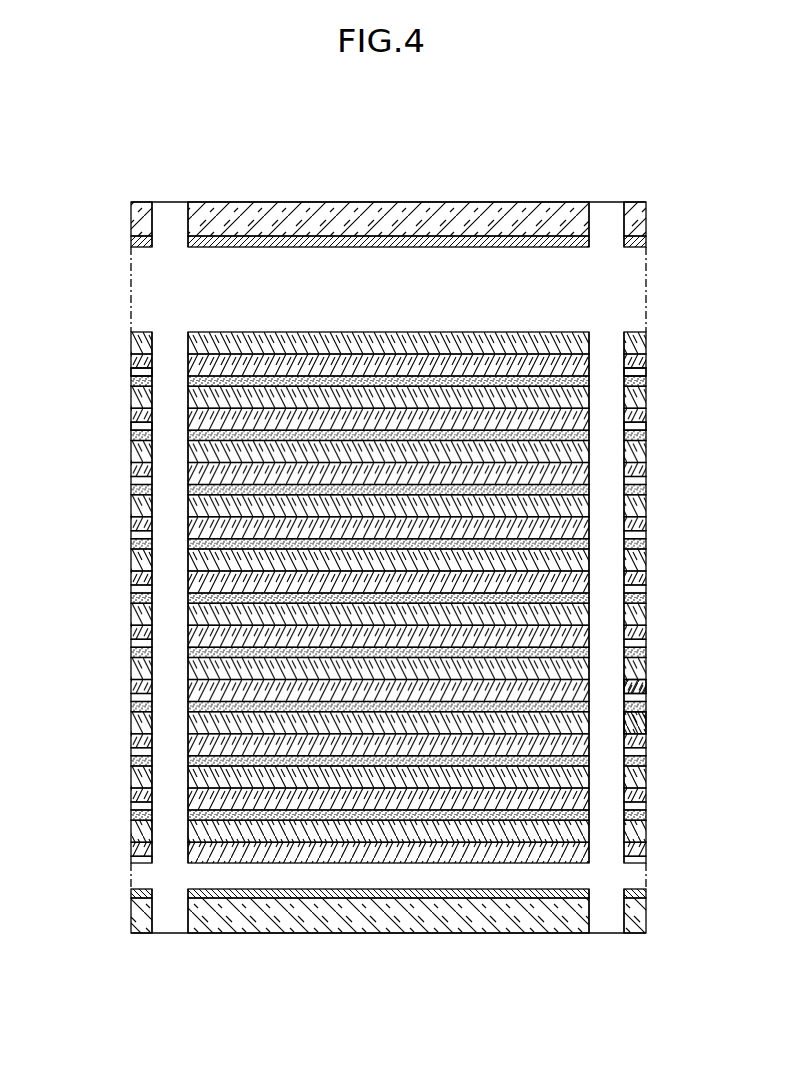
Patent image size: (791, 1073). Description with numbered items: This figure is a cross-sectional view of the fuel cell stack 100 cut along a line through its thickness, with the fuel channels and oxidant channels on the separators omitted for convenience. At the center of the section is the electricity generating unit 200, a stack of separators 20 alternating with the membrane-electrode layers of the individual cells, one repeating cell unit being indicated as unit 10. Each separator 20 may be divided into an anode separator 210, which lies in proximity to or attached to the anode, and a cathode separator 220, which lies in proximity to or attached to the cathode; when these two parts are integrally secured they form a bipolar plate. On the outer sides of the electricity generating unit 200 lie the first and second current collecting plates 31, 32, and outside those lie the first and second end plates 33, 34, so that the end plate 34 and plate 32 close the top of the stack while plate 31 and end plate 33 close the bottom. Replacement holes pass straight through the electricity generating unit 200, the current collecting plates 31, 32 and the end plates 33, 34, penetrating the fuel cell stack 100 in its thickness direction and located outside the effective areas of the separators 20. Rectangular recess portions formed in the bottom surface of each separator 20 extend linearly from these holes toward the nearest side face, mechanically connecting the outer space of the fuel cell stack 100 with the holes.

The fuel cell stack 100 is at (410, 118).
The electricity generating unit 200 is at (110, 578).
The unit cell 10 is at (646, 590).
The separator 20 is at (686, 704).
The anode separator 210 is at (646, 683).
The cathode separator 220 is at (669, 720).
The first current collecting plate 31 is at (302, 894).
The second current collecting plate 32 is at (252, 243).
The first end plate 33 is at (403, 925).
The second end plate 34 is at (455, 215).